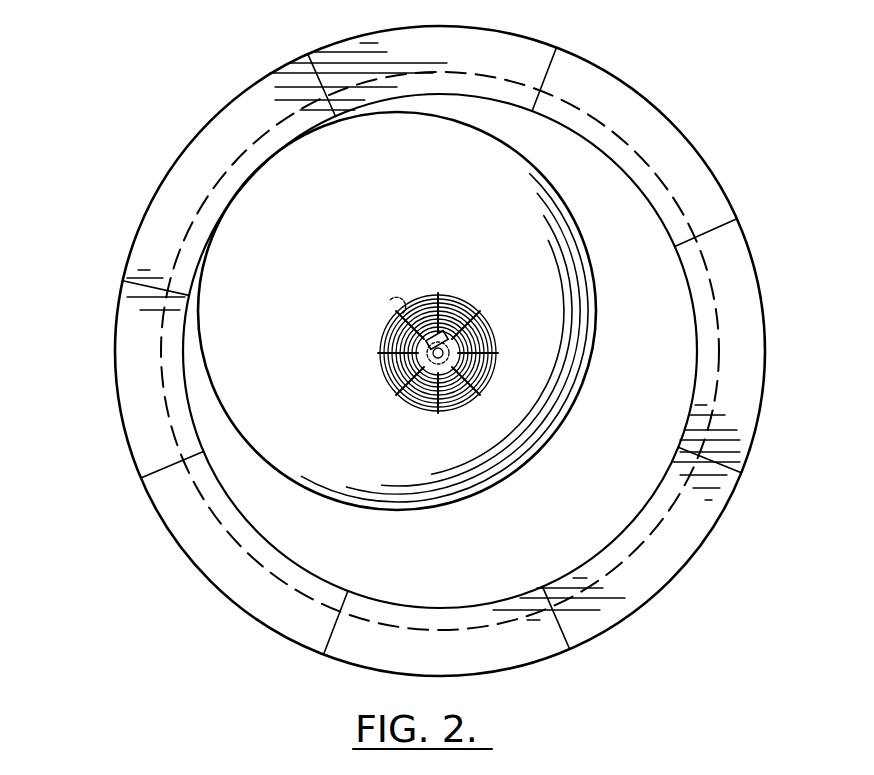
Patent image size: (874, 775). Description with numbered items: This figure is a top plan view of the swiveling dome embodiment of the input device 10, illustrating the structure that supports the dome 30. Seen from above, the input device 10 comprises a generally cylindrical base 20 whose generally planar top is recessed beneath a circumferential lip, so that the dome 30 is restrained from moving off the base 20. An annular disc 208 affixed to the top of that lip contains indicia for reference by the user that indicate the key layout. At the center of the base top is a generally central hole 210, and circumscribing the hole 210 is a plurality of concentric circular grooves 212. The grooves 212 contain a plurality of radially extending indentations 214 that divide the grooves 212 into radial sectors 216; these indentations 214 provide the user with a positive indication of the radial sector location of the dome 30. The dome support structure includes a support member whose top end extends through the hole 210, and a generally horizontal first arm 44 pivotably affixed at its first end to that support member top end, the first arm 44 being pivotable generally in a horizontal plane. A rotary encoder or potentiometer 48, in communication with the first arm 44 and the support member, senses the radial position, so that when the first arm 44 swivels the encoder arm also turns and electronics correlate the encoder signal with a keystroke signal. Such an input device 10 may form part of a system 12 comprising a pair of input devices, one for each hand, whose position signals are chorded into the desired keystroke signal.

The input device 10 is at (97, 72).
The system 12 is at (155, 38).
The base 20 is at (97, 333).
The dome 30 is at (308, 160).
The first arm 44 is at (452, 325).
The rotary encoder or potentiometer 48 is at (490, 352).
The annular disc 208 is at (735, 437).
The hole 210 is at (453, 355).
The concentric circular grooves 212 is at (502, 372).
The radially extending indentations 214 is at (400, 395).
The radial sectors 216 is at (473, 410).